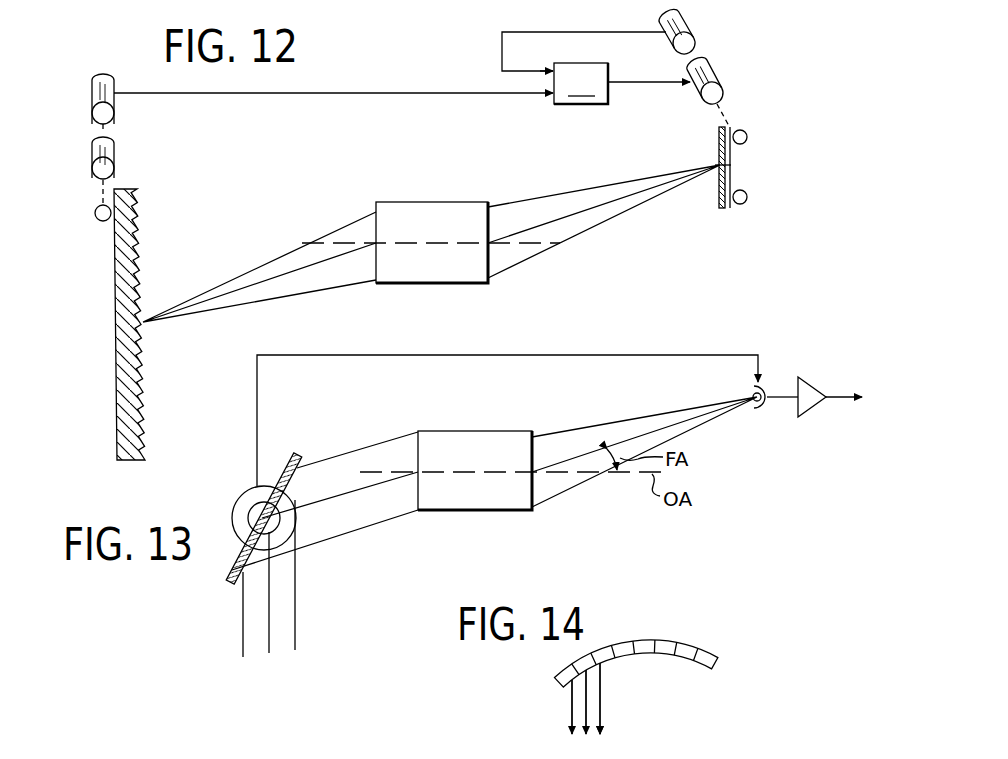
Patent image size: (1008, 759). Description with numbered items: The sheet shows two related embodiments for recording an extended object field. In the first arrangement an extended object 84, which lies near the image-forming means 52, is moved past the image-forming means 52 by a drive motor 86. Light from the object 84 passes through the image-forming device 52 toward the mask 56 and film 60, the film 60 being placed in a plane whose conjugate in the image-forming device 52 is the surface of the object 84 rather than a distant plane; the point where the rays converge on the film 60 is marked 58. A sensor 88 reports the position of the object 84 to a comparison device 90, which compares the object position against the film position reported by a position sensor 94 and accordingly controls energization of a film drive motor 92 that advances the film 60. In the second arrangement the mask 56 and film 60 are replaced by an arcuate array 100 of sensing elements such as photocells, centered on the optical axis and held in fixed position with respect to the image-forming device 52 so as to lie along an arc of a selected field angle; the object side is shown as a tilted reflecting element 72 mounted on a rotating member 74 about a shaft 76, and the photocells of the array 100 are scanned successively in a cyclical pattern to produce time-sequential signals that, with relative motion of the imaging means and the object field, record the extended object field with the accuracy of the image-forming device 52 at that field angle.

In FIG. 12, the image-forming means 52 is at (437, 210).
In FIG. 13, the image-forming means 52 is at (478, 432).
In FIG. 12, the mask 56 is at (720, 199).
In FIG. 12, the detector aperture 58 is at (718, 164).
In FIG. 12, the film 60 is at (732, 152).
In FIG. 13, the tilted mirror 72 is at (291, 462).
In FIG. 13, the rotating drum 74 is at (254, 492).
In FIG. 13, the shaft 76 is at (238, 516).
In FIG. 12, the extended object 84 is at (124, 350).
In FIG. 12, the drive motor 86 is at (93, 157).
In FIG. 12, the sensor 88 is at (93, 95).
In FIG. 12, the comparison device 90 is at (581, 83).
In FIG. 12, the film drive motor 92 is at (715, 76).
In FIG. 12, the position sensor 94 is at (690, 27).
In FIG. 14, the arcuate array of sensing elements 100 is at (710, 656).